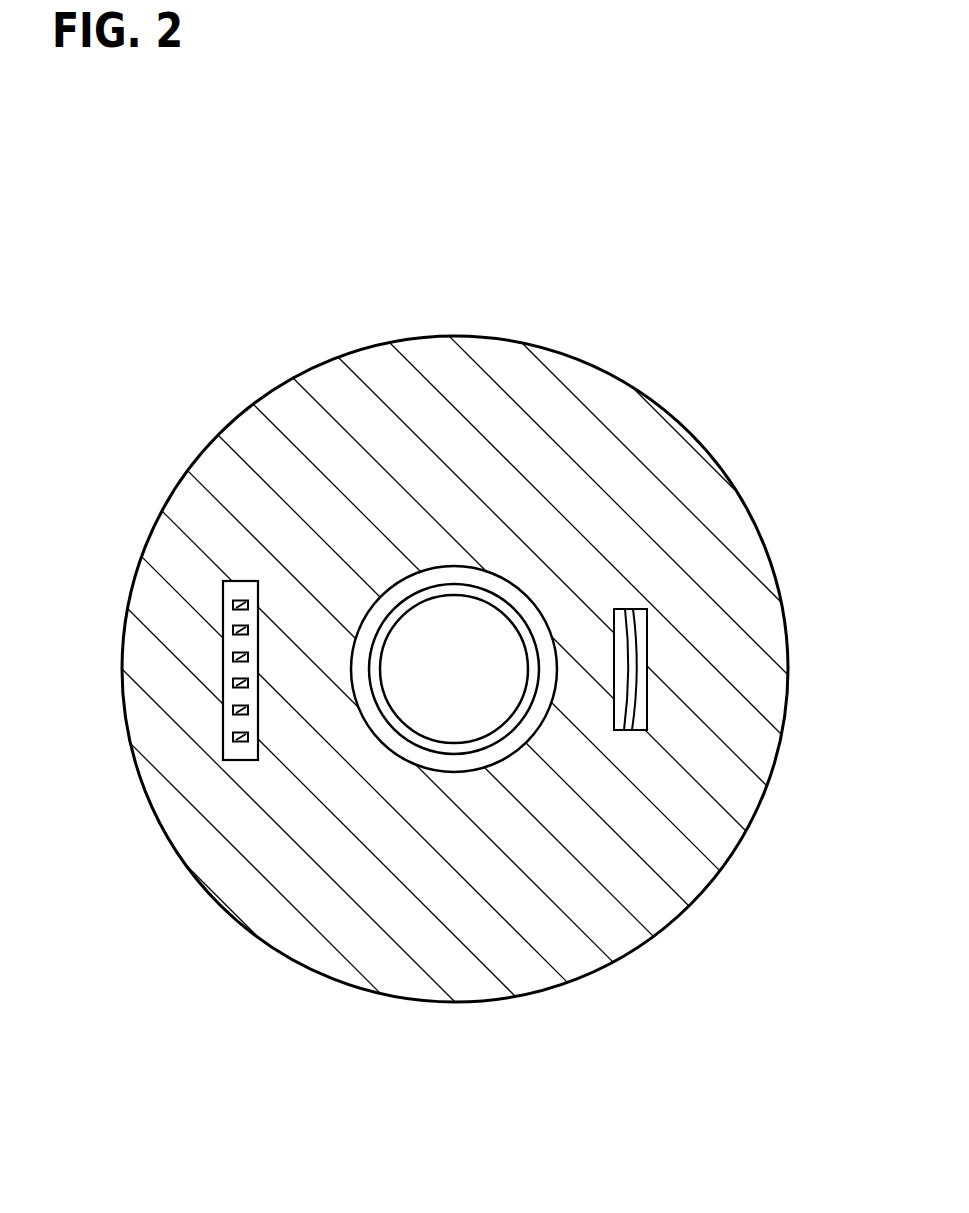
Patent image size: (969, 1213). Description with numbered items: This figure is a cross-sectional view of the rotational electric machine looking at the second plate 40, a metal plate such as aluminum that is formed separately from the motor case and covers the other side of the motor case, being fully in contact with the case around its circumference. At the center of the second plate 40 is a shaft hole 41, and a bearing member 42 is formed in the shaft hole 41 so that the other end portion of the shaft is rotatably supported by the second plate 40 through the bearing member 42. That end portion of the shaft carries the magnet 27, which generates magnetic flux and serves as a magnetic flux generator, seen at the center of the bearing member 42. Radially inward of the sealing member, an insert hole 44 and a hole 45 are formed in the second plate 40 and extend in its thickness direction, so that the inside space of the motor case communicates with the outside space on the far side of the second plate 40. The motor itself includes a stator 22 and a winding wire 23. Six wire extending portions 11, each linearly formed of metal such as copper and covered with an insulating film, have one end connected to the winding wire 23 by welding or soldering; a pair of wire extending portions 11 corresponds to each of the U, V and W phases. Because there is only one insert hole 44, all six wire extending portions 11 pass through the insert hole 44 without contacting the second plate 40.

The second plate 40 is at (458, 346).
The shaft hole 41 is at (557, 657).
The bearing member 42 is at (491, 602).
The magnet 27 is at (445, 722).
The hole 45 is at (635, 609).
The stator 22 is at (632, 652).
The winding wire 23 is at (640, 681).
The insert hole 44 is at (224, 587).
The wire extending portion 11 is at (233, 605).